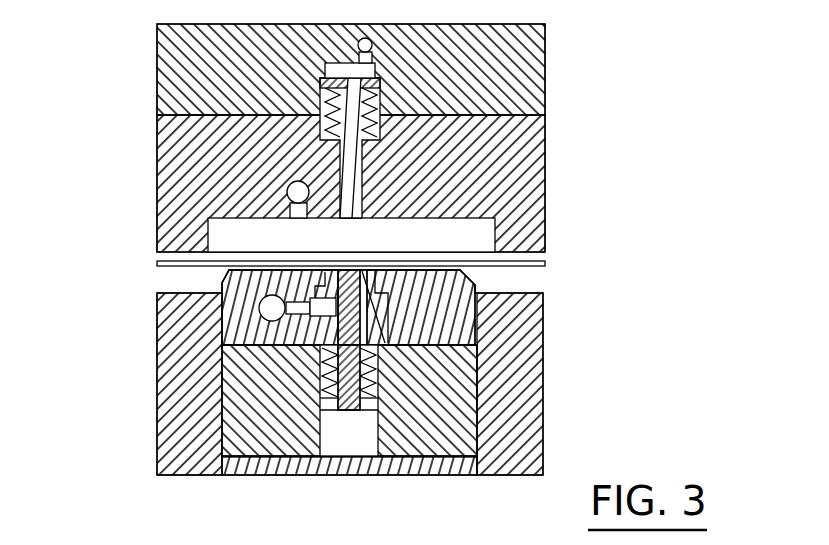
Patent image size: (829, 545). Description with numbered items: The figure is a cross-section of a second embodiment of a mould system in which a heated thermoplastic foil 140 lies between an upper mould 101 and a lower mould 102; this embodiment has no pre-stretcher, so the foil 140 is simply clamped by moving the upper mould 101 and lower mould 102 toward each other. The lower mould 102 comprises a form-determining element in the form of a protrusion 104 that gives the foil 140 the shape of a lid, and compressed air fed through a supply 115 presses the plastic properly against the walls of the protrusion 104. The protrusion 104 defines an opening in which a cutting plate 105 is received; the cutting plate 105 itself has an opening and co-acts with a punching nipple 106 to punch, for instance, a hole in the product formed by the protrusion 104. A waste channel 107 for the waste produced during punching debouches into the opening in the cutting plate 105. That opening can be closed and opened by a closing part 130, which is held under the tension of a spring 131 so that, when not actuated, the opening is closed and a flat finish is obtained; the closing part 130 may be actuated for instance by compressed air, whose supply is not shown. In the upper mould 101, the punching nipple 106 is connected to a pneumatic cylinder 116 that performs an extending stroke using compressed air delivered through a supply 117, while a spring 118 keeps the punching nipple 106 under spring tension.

The upper mould 101 is at (610, 176).
The lower mould 102 is at (610, 328).
The protrusion 104 is at (233, 270).
The cutting plate 105 is at (328, 286).
The punching nipple 106 is at (345, 160).
The waste channel 107 is at (287, 305).
The supply 115 is at (298, 192).
The pneumatic cylinder 116 is at (337, 63).
The supply 117 is at (372, 44).
The spring 118 is at (380, 103).
The closing part 130 is at (324, 349).
The spring 131 is at (378, 378).
The heated thermoplastic foil 140 is at (512, 265).